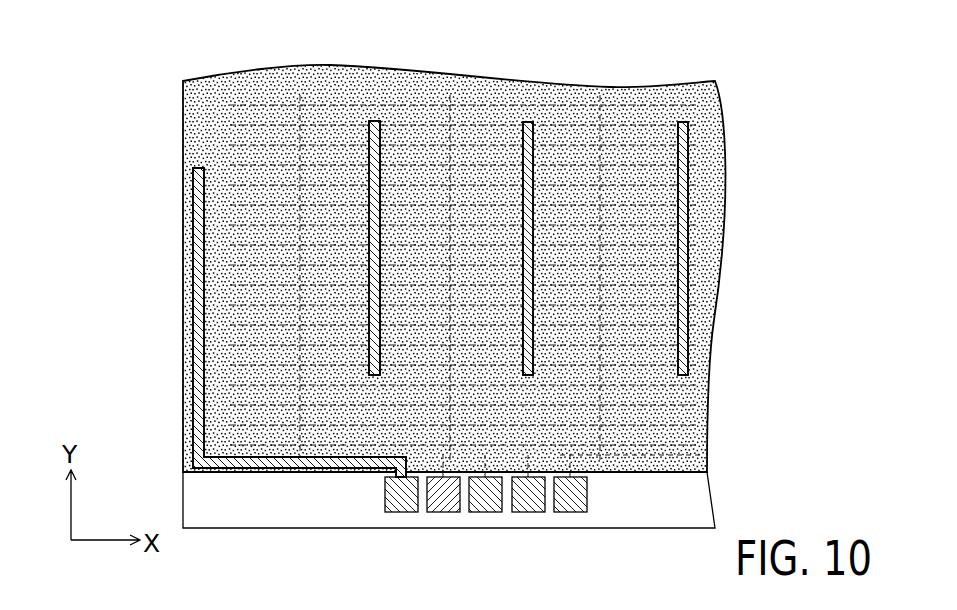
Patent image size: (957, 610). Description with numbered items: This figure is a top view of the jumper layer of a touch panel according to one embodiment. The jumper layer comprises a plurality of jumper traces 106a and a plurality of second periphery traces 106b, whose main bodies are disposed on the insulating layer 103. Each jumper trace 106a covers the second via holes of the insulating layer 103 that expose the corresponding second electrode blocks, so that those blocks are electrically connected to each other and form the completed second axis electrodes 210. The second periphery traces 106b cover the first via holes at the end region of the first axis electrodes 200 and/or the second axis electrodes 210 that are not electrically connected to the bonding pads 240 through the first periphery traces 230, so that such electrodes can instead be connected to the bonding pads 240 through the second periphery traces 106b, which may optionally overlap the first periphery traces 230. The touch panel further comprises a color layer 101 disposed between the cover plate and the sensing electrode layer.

The color layer 101 is at (705, 490).
The insulating layer 103 is at (708, 448).
The jumper trace 106a is at (690, 250).
The second periphery trace 106b is at (193, 237).
The first axis electrode 200 is at (727, 172).
The second axis electrode 210 is at (378, 80).
The first periphery trace 230 is at (641, 450).
The bonding pad 240 is at (593, 522).